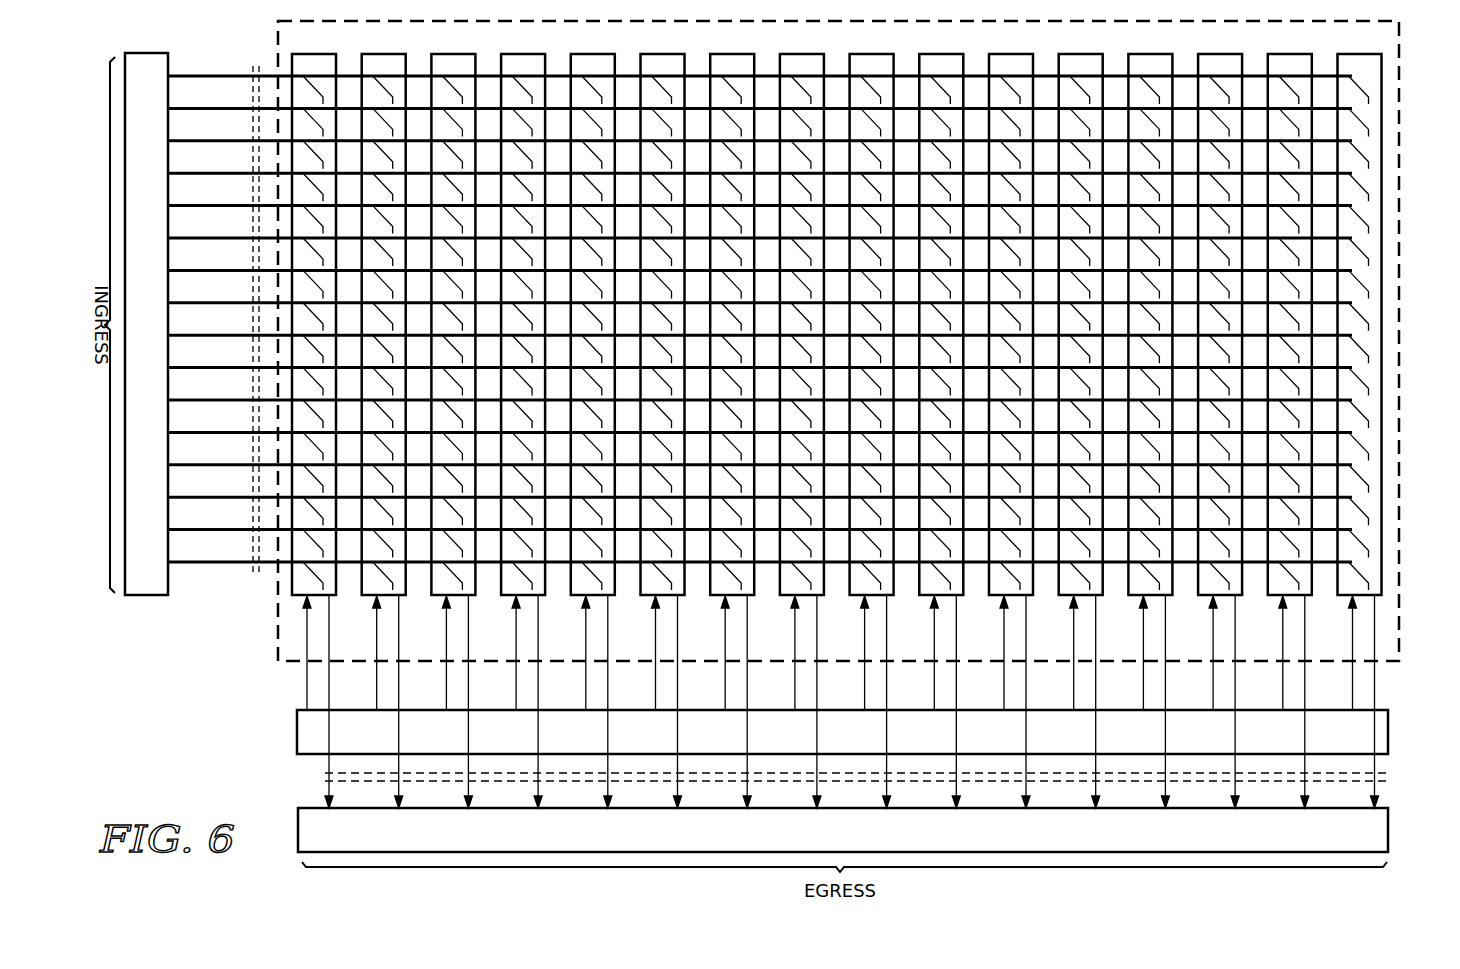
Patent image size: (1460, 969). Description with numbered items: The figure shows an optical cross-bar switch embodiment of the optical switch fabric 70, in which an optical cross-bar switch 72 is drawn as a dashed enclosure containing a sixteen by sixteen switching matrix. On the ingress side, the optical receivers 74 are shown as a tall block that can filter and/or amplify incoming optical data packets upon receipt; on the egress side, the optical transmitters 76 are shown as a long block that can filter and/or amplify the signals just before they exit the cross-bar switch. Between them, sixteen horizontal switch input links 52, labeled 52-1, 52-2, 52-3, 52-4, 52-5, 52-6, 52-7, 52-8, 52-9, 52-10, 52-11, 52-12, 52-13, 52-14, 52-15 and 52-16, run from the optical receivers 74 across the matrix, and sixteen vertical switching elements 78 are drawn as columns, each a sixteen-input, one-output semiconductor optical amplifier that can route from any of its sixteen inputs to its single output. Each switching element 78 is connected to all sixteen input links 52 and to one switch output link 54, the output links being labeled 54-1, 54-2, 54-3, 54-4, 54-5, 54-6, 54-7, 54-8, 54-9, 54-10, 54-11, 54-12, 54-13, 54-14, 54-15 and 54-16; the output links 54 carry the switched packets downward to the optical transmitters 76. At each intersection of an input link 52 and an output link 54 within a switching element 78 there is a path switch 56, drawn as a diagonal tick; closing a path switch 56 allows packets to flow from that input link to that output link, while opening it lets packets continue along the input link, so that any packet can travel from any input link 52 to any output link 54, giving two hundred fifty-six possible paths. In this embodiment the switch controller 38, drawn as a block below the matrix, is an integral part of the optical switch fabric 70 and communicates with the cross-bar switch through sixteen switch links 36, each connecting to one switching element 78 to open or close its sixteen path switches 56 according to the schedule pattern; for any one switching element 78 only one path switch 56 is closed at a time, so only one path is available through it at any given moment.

The optical switch fabric 70 is at (190, 720).
The optical cross-bar switch 72 is at (1400, 130).
The optical receiver 74 is at (147, 596).
The optical transmitter 76 is at (1388, 833).
The switching element 78 is at (396, 598).
The switch link 36 is at (376, 674).
The switch controller 38 is at (1388, 735).
The switch input link 52 is at (257, 575).
The switch output link 54 is at (324, 774).
The path switch 56 is at (320, 580).
The switch input link 52-1 is at (760, 65).
The switch input link 52-2 is at (760, 97).
The switch input link 52-3 is at (760, 130).
The switch input link 52-4 is at (760, 162).
The switch input link 52-5 is at (760, 195).
The switch input link 52-6 is at (760, 227).
The switch input link 52-7 is at (760, 259).
The switch input link 52-8 is at (760, 292).
The switch input link 52-9 is at (760, 324).
The switch input link 52-10 is at (760, 357).
The switch input link 52-11 is at (760, 389).
The switch input link 52-12 is at (760, 421).
The switch input link 52-13 is at (760, 454).
The switch input link 52-14 is at (760, 486).
The switch input link 52-15 is at (760, 519).
The switch input link 52-16 is at (760, 551).
The switch output link 54-1 is at (314, 312).
The switch output link 54-2 is at (384, 312).
The switch output link 54-3 is at (453, 312).
The switch output link 54-4 is at (523, 312).
The switch output link 54-5 is at (593, 312).
The switch output link 54-6 is at (663, 312).
The switch output link 54-7 is at (732, 312).
The switch output link 54-8 is at (802, 312).
The switch output link 54-9 is at (872, 312).
The switch output link 54-10 is at (941, 312).
The switch output link 54-11 is at (1010, 312).
The switch output link 54-12 is at (1080, 312).
The switch output link 54-13 is at (1150, 312).
The switch output link 54-14 is at (1219, 312).
The switch output link 54-15 is at (1289, 312).
The switch output link 54-16 is at (1359, 312).